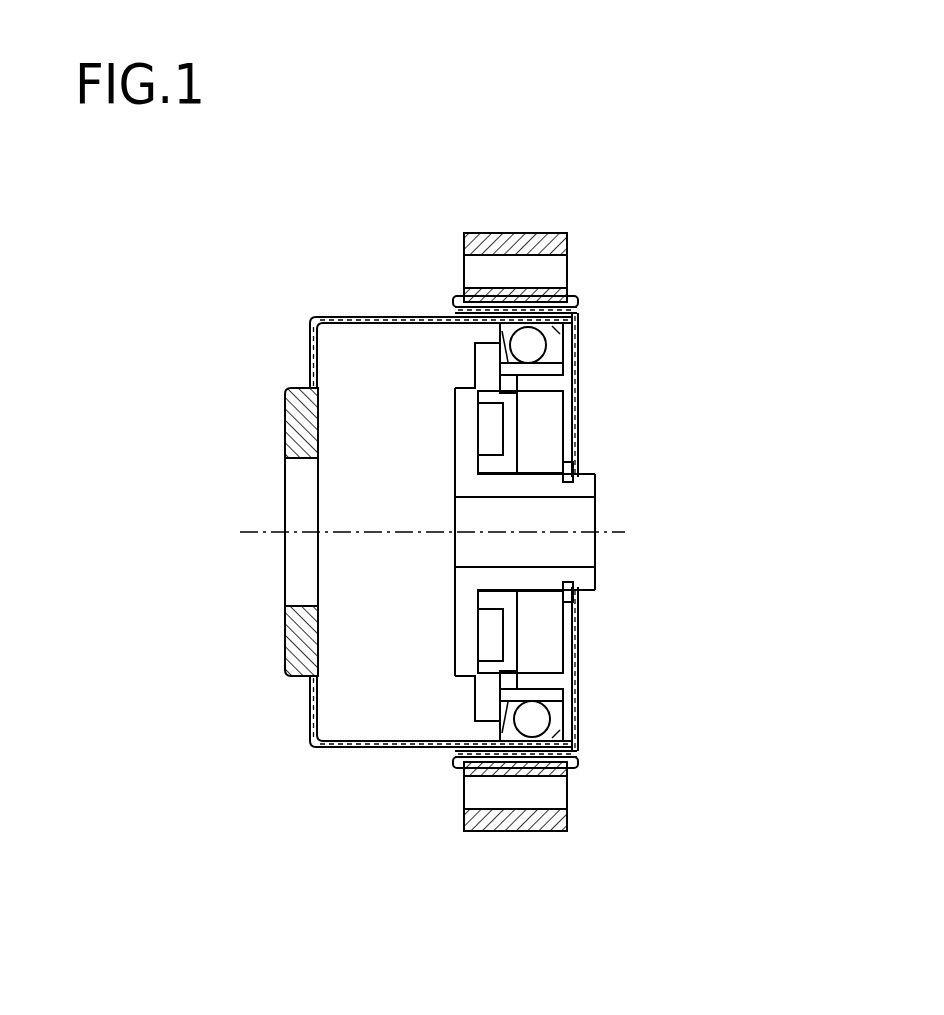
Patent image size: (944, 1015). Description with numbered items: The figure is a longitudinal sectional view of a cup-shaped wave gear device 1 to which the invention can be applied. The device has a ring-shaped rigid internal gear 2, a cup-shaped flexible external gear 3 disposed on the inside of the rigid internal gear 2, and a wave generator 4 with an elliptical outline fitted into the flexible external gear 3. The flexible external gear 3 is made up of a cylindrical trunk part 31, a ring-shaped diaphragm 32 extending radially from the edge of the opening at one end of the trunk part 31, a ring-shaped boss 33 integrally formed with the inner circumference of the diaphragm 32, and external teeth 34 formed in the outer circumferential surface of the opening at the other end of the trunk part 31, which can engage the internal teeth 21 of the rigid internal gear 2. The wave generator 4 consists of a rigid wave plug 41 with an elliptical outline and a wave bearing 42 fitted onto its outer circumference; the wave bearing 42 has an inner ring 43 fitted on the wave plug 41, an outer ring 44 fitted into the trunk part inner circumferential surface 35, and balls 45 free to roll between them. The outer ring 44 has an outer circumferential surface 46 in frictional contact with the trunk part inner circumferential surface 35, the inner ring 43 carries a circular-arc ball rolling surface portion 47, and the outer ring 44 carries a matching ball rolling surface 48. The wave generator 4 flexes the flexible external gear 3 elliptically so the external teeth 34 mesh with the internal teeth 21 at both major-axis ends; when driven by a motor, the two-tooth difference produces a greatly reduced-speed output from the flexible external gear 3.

The cup-shaped wave gear device 1 is at (600, 266).
The rigid internal gear 2 is at (547, 210).
The internal teeth 21 is at (583, 756).
The cup-shaped flexible external gear 3 is at (391, 292).
The cylindrical trunk part 31 is at (388, 750).
The ring-shaped diaphragm 32 is at (272, 682).
The ring-shaped boss 33 is at (293, 640).
The external teeth 34 is at (542, 762).
The trunk part inner circumferential surface 35 is at (447, 740).
The wave generator 4 is at (586, 488).
The rigid wave plug 41 is at (548, 452).
The wave bearing 42 is at (565, 352).
The inner ring 43 is at (542, 374).
The outer ring 44 is at (560, 327).
The balls 45 is at (535, 347).
The outer circumferential surface 46 is at (582, 748).
The ball rolling surface portion 47 is at (556, 712).
The ball rolling surface 48 is at (535, 736).